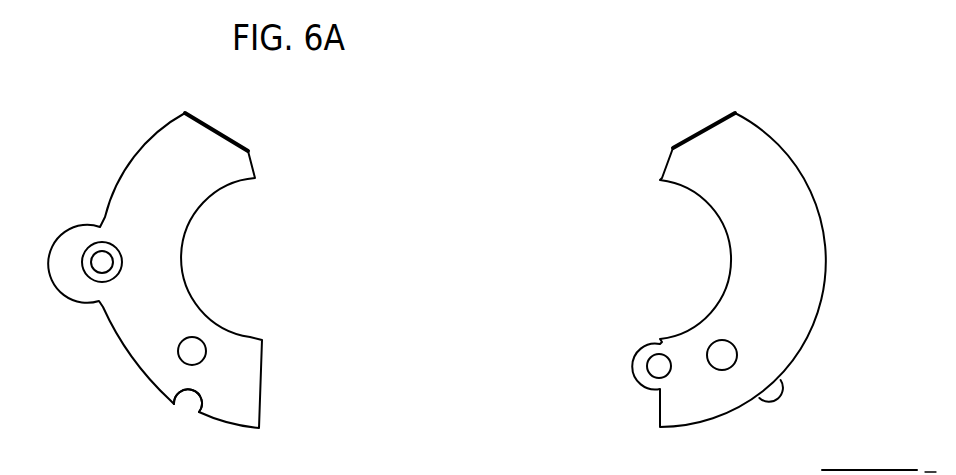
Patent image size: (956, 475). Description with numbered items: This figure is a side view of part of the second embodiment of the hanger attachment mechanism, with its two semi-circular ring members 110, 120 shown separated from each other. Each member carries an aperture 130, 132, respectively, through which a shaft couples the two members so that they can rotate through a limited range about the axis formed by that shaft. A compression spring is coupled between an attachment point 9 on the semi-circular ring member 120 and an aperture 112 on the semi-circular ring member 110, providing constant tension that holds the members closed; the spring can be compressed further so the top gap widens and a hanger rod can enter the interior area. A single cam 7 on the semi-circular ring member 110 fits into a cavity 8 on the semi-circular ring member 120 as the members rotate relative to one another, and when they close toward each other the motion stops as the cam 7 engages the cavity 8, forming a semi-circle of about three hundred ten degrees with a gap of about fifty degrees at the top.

The semi-circular ring member 110 is at (803, 198).
The semi-circular ring member 120 is at (152, 168).
The aperture 112 is at (660, 367).
The aperture 130 is at (715, 342).
The aperture 132 is at (193, 338).
The cam 7 is at (775, 385).
The cavity 8 is at (190, 400).
The attachment point 9 is at (100, 260).